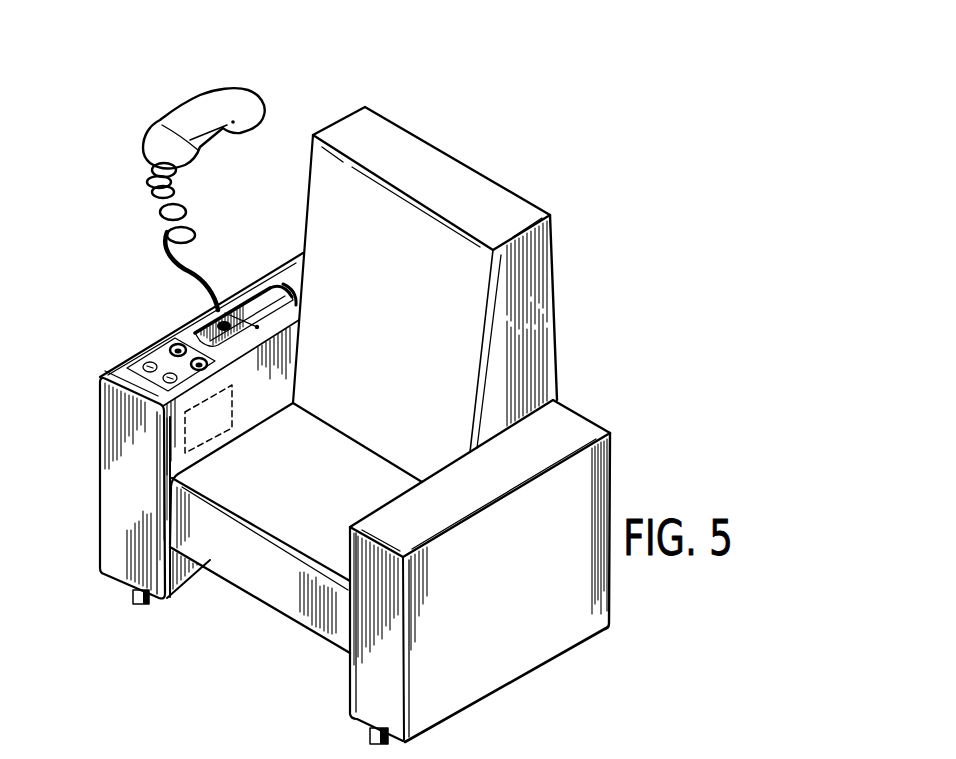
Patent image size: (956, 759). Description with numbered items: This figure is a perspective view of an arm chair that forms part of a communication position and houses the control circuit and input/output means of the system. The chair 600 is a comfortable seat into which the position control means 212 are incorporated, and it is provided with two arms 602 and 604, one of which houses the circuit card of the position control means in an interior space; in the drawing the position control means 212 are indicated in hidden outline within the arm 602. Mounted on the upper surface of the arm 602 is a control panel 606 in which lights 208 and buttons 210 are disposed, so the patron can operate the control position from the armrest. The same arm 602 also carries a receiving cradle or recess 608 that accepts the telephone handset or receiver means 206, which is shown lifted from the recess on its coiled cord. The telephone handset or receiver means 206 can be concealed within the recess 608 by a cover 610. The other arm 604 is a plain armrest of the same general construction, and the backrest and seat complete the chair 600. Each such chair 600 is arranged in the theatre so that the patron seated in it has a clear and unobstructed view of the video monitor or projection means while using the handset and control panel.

The telephone handset or receiver means 206 is at (205, 105).
The lights 208 is at (152, 366).
The buttons 210 is at (190, 343).
The position control means 212 is at (224, 431).
The chair 600 is at (428, 396).
The arm 602 is at (209, 416).
The arm 604 is at (564, 423).
The control panel 606 is at (177, 342).
The receiving cradle or recess 608 is at (220, 320).
The cover 610 is at (298, 306).